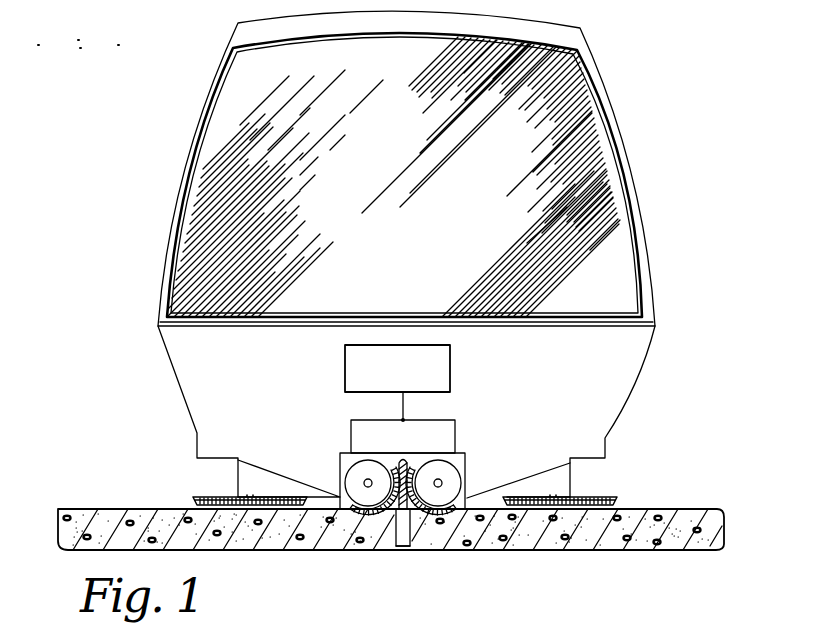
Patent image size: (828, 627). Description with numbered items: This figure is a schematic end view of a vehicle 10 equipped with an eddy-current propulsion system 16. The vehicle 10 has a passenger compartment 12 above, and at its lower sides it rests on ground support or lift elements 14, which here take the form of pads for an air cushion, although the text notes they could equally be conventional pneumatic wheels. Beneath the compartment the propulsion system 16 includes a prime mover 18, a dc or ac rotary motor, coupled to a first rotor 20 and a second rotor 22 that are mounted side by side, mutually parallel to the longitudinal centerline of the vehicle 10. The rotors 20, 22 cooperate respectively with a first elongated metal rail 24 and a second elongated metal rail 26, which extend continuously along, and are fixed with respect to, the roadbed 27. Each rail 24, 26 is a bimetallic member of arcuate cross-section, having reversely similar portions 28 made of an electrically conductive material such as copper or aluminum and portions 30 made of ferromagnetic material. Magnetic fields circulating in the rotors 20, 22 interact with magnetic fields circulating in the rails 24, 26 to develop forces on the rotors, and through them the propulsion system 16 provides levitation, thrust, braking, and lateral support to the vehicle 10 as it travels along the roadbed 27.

The vehicle 10 is at (656, 240).
The passenger compartment 12 is at (620, 134).
The lift elements 14 is at (197, 498).
The eddy-current propulsion system 16 is at (377, 535).
The prime mover 18 is at (448, 366).
The first rotor 20 is at (466, 480).
The second rotor 22 is at (343, 486).
The first elongated metal rail 24 is at (452, 512).
The second elongated metal rail 26 is at (348, 511).
The roadbed 27 is at (700, 509).
The electrically conductive portions 28 is at (398, 466).
The ferromagnetic portions 30 is at (401, 512).